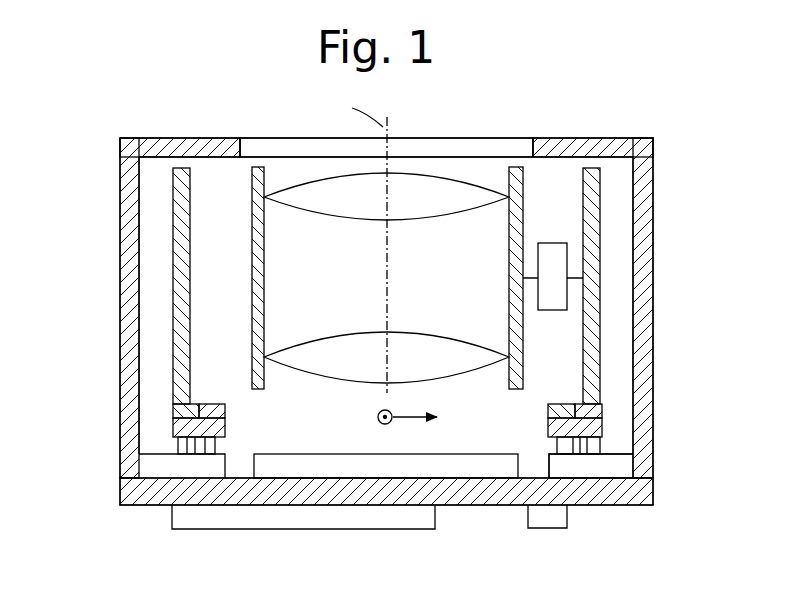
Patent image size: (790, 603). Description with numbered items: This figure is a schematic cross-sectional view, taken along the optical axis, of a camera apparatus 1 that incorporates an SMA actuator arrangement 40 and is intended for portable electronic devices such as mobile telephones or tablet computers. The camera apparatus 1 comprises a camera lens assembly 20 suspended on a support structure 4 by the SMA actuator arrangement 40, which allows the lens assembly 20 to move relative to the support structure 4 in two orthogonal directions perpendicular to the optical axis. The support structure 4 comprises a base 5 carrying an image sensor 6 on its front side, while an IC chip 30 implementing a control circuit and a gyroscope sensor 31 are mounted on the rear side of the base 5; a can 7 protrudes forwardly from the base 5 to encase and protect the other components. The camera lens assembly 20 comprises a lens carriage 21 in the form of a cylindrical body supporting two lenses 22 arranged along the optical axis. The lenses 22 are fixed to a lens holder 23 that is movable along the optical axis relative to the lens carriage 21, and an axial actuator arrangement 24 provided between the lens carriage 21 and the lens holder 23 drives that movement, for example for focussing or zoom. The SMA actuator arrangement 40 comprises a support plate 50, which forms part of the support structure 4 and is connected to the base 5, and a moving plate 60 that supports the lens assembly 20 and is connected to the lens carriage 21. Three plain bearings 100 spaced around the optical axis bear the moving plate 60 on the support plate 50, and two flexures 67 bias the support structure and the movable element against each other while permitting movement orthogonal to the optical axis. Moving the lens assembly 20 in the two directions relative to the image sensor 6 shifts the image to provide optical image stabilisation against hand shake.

The camera apparatus 1 is at (84, 363).
The support structure 4 is at (133, 490).
The base 5 is at (375, 490).
The image sensor 6 is at (458, 467).
The can 7 is at (130, 295).
The camera lens assembly 20 is at (291, 150).
The lens carriage 21 is at (172, 232).
The lenses 22 is at (455, 192).
The lens holder 23 is at (253, 205).
The axial actuator arrangement 24 is at (557, 257).
The IC chip 30 is at (300, 513).
The gyroscope sensor 31 is at (545, 520).
The SMA actuator arrangement 40 is at (160, 442).
The support plate 50 is at (617, 467).
The moving plate 60 is at (590, 430).
The flexures 67 is at (180, 447).
The plain bearings 100 is at (207, 445).